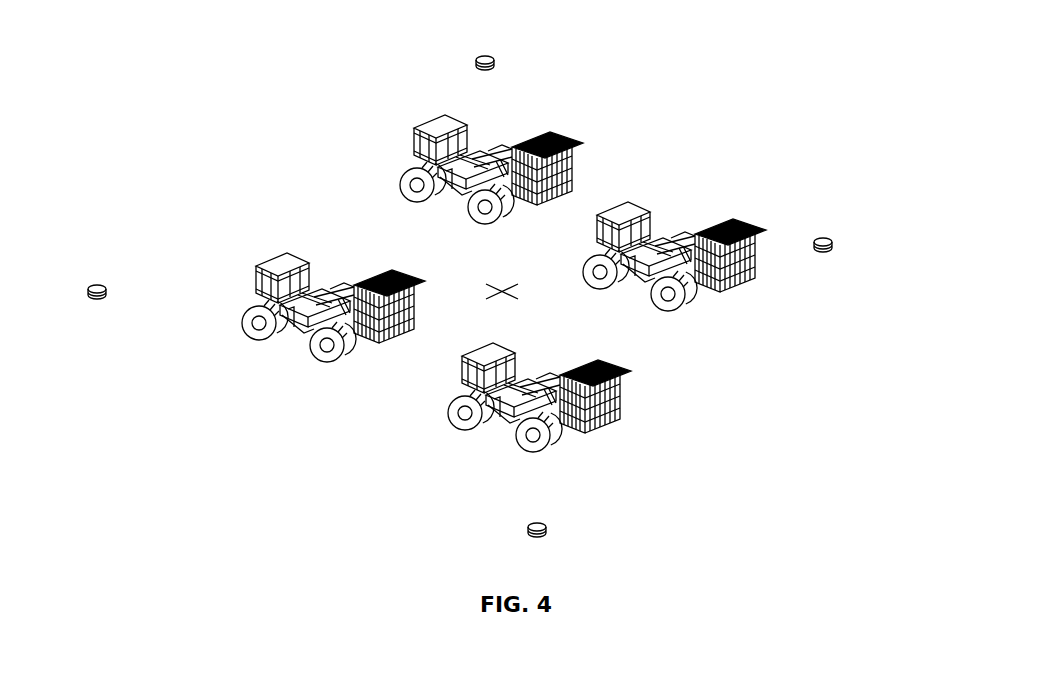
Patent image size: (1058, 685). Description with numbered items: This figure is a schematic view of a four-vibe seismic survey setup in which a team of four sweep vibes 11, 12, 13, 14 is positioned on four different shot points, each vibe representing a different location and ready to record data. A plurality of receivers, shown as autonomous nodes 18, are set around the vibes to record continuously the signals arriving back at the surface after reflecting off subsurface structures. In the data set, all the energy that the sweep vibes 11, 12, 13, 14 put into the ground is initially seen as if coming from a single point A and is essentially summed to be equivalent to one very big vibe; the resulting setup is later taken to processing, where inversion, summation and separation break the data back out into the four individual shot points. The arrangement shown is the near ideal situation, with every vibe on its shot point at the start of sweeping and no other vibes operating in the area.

The sweep vibe 11 is at (402, 160).
The sweep vibe 12 is at (677, 212).
The sweep vibe 13 is at (256, 352).
The sweep vibe 14 is at (460, 444).
The receiver (autonomous node) 18 is at (508, 62).
The target point A is at (499, 280).